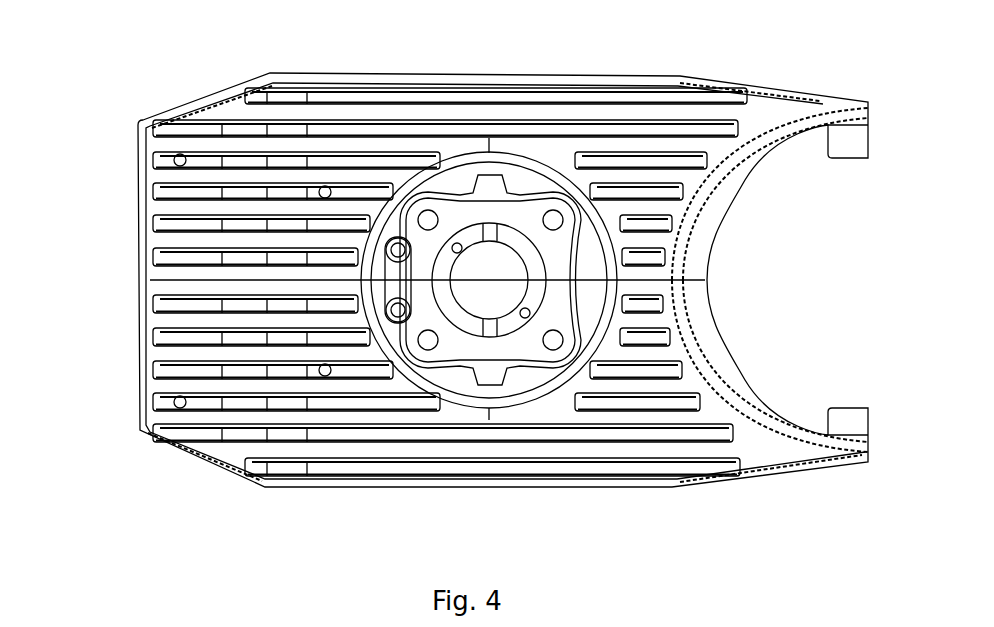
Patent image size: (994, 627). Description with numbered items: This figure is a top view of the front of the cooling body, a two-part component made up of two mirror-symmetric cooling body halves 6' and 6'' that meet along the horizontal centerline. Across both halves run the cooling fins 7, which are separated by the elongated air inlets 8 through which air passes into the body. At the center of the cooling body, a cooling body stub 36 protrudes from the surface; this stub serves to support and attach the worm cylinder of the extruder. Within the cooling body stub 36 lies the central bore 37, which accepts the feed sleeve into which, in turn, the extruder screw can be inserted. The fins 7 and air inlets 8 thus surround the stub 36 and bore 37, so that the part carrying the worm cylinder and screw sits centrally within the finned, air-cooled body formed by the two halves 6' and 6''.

The cooling fins 7 is at (222, 110).
The cooling body half 6' is at (391, 177).
The cooling body half 6'' is at (388, 385).
The air inlets 8 is at (203, 402).
The cooling body stub 36 is at (458, 212).
The central bore 37 is at (505, 273).